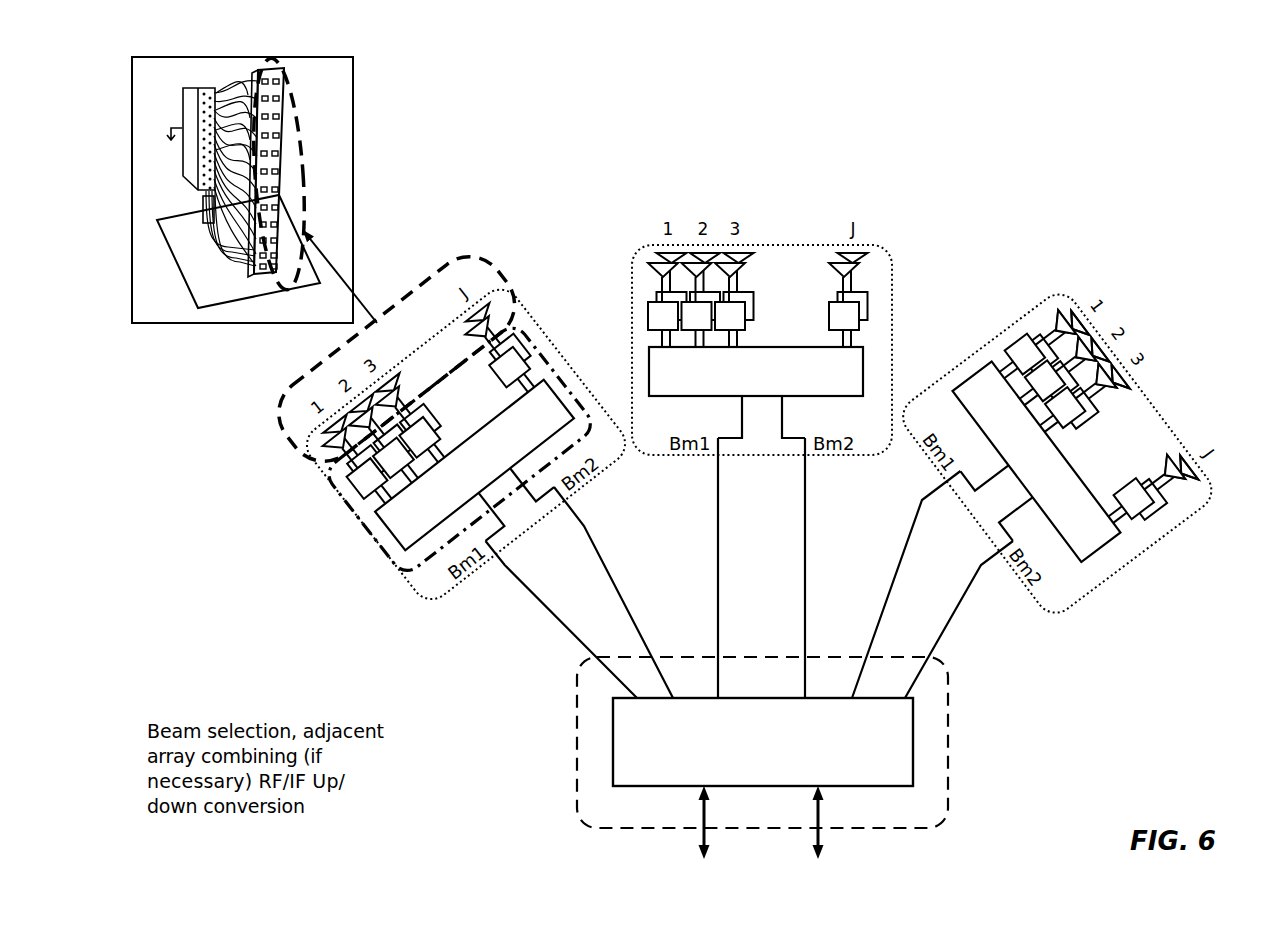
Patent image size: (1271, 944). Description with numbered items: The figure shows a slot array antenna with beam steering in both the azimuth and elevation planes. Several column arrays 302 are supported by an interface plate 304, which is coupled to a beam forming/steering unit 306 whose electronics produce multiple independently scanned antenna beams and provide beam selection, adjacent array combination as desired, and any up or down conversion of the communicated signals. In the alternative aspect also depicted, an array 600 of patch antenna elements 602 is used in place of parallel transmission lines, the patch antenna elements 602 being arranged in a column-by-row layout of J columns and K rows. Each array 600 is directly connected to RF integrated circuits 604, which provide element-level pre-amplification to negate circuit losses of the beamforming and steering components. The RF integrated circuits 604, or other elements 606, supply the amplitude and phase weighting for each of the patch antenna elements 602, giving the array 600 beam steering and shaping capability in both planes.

The column arrays 302 is at (559, 320).
The interface plate 304 is at (951, 709).
The beam forming/steering unit 306 is at (611, 742).
The array 600 is at (1168, 531).
The patch antenna elements 602 is at (1082, 323).
The RF integrated circuits 604 is at (328, 482).
The other elements 606 is at (382, 552).